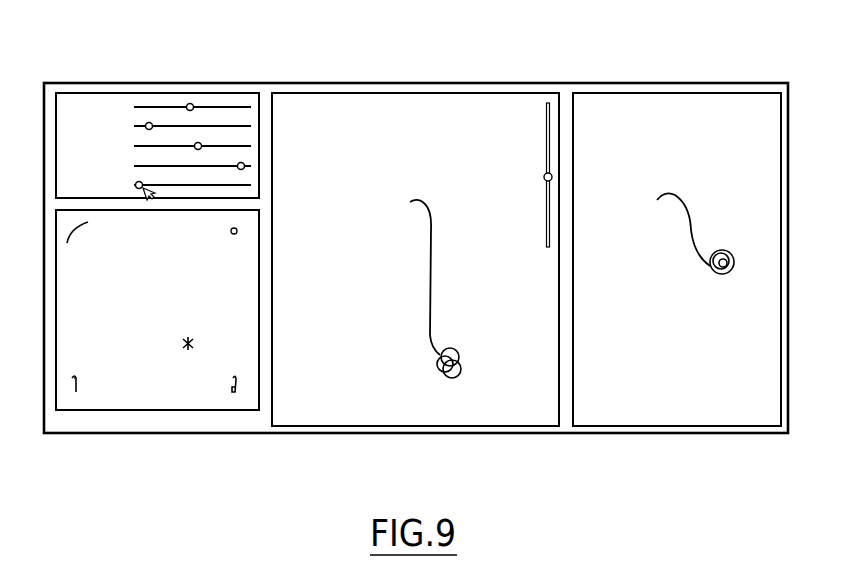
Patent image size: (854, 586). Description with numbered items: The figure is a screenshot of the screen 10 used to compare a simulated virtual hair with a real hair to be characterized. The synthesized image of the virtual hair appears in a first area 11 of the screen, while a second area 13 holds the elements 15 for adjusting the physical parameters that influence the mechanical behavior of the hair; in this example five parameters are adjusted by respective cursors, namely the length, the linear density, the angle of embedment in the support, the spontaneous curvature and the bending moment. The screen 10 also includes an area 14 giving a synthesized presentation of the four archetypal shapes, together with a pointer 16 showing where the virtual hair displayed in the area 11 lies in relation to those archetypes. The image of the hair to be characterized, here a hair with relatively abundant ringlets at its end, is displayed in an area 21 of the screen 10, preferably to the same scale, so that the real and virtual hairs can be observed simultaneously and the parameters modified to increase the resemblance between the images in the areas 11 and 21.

The screen 10 is at (753, 83).
The second area of the screen 13 is at (177, 98).
The elements for adjusting physical parameters 15 is at (193, 105).
The area for a synthesized presentation 14 is at (148, 397).
The pointer 16 is at (186, 341).
The first area of the screen 11 is at (402, 412).
The area of the screen 21 is at (698, 412).